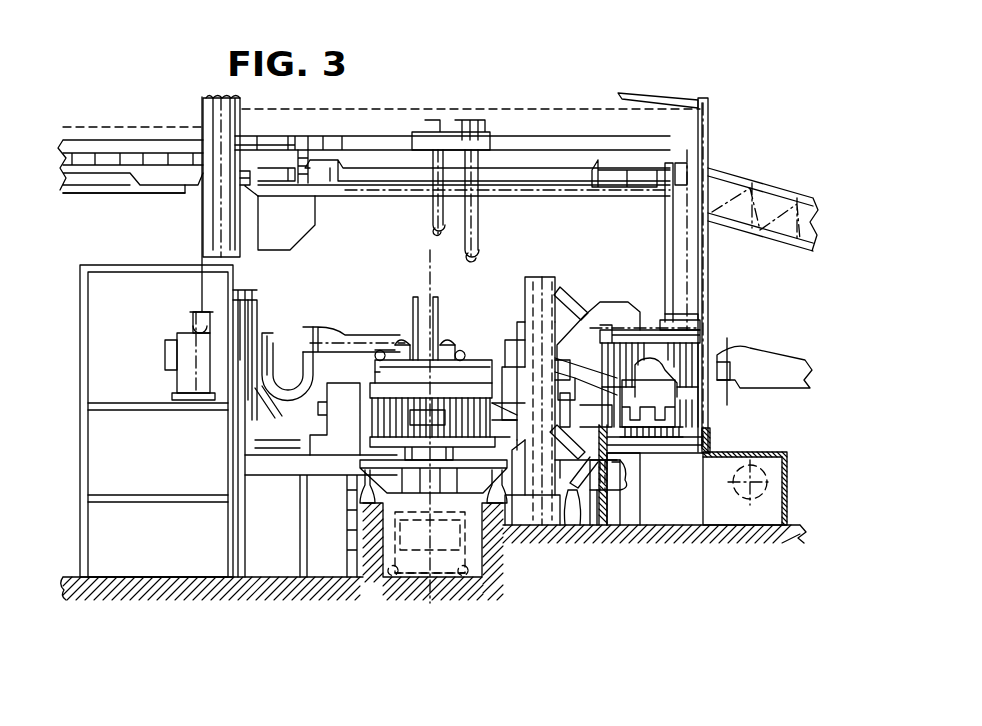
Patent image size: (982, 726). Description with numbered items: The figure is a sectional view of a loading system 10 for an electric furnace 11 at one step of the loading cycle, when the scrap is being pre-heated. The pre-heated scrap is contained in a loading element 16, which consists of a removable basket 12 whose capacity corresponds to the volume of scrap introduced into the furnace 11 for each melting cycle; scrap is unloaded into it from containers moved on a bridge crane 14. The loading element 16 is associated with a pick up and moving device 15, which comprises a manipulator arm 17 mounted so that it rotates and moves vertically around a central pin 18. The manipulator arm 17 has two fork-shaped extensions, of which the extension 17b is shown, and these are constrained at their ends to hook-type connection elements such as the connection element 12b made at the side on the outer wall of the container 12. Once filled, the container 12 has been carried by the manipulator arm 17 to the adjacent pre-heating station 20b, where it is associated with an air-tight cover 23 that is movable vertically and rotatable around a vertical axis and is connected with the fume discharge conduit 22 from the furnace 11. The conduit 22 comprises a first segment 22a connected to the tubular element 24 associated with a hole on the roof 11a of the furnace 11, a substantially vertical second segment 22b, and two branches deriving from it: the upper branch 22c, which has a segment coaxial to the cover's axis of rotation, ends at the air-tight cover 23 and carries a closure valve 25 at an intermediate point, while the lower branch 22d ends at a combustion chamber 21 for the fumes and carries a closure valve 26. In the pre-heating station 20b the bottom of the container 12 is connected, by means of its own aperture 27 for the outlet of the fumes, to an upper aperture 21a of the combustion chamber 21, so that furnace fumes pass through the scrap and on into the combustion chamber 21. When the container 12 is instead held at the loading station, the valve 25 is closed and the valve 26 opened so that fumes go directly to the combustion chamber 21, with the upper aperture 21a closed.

The loading system 10 is at (372, 609).
The electric furnace 11 is at (376, 328).
The roof 11a is at (390, 395).
The removable basket 12 is at (707, 403).
The hook-type connection element 12b is at (810, 370).
The bridge crane 14 is at (410, 208).
The pick up and moving device 15 is at (535, 277).
The loading element 16 is at (712, 427).
The manipulator arm 17 is at (695, 332).
The extension 17b is at (660, 385).
The central pin 18 is at (550, 250).
The pre-heating station 20b is at (717, 322).
The combustion chamber 21 is at (763, 517).
The upper aperture 21a is at (617, 470).
The fume discharge conduit 22 is at (643, 295).
The first segment 22a is at (503, 357).
The second segment 22b is at (533, 485).
The upper branch 22c is at (645, 300).
The lower branch 22d is at (593, 487).
The air-tight cover 23 is at (663, 335).
The tubular element 24 is at (470, 367).
The closure valve 25 is at (620, 250).
The closure valve 26 is at (590, 485).
The aperture 27 is at (683, 442).